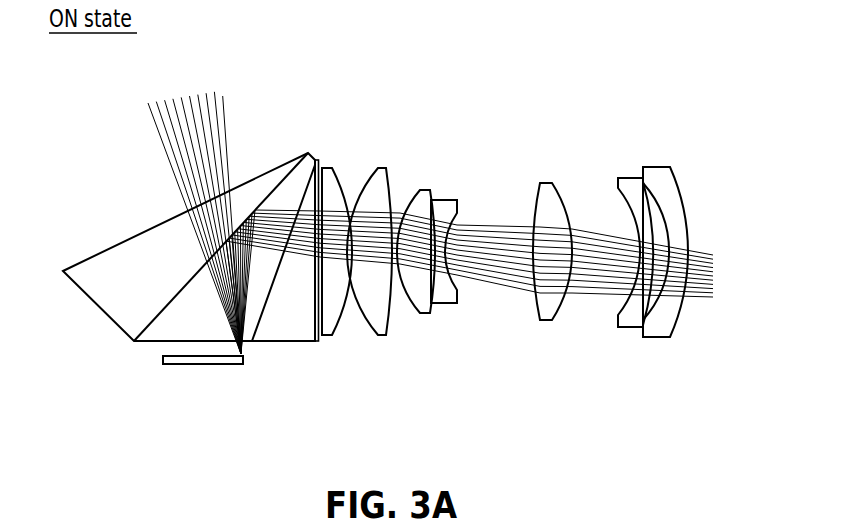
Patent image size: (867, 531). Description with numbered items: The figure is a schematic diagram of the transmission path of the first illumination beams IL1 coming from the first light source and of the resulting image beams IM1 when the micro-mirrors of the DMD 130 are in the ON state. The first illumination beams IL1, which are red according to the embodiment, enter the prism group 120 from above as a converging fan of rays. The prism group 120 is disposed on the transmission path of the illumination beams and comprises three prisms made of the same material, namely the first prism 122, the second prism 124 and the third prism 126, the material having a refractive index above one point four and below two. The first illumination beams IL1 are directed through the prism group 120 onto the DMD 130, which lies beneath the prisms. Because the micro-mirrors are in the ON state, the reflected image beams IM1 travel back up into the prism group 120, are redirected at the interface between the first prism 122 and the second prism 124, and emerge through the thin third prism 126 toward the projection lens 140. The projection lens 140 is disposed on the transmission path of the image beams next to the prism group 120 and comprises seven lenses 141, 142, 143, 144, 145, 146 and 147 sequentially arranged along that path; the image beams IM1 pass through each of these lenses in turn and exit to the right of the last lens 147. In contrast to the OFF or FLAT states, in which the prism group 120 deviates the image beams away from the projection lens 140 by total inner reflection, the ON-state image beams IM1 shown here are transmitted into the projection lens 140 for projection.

The first illumination beams IL1 is at (194, 207).
The image beams IM1 is at (488, 281).
The prism group 120 is at (385, 97).
The first prism 122 is at (272, 183).
The second prism 124 is at (300, 190).
The third prism 126 is at (316, 162).
The DMD 130 is at (197, 366).
The projection lens 140 is at (678, 405).
The lens 141 is at (323, 342).
The lens 142 is at (382, 335).
The lens 143 is at (425, 313).
The lens 144 is at (453, 303).
The lens 145 is at (546, 320).
The lens 146 is at (630, 327).
The lens 147 is at (655, 337).